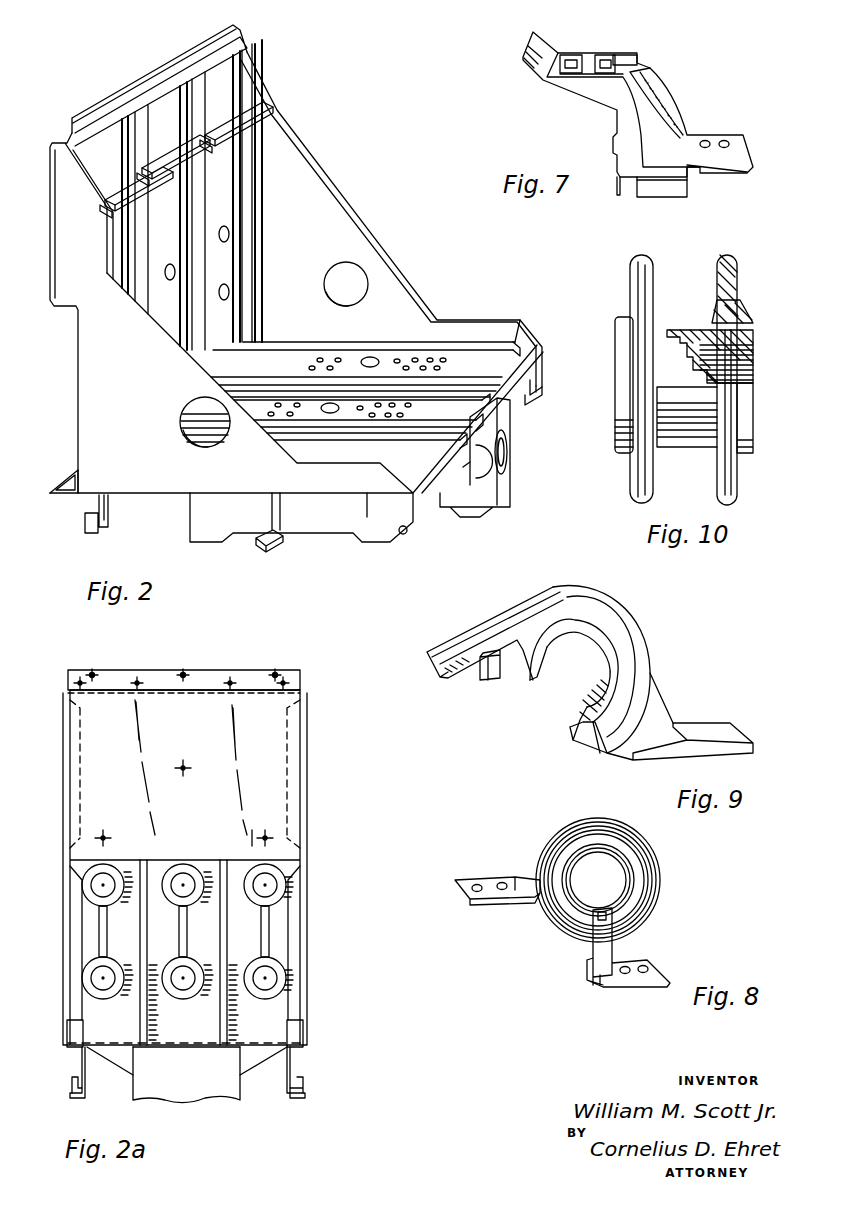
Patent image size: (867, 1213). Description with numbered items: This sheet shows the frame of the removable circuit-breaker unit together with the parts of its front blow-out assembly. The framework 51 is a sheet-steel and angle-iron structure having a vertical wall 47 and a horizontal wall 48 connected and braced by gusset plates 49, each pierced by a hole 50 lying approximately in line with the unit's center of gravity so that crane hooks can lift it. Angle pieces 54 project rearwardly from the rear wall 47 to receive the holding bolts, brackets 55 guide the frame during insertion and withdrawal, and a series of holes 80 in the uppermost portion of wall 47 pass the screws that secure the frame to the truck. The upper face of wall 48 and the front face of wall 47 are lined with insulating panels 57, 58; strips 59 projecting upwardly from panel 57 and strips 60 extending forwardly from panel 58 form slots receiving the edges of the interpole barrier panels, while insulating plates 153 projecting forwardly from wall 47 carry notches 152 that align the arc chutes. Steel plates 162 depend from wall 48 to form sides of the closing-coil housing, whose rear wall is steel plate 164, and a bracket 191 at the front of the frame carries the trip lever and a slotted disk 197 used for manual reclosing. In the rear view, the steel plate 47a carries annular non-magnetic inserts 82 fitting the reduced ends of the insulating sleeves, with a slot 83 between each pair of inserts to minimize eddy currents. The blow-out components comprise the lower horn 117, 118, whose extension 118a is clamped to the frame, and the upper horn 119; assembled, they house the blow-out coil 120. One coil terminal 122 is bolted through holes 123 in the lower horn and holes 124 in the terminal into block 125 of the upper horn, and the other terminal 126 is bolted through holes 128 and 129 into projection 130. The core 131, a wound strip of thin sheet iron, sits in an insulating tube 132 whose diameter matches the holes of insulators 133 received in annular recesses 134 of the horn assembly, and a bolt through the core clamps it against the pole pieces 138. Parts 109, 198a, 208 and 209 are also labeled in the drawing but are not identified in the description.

In FIG. 2, the vertical wall 47 is at (52, 212).
In FIG. 2A, the vertical wall 47 is at (285, 740).
In FIG. 2A, the steel plate 47a is at (280, 935).
In FIG. 2, the horizontal wall 48 is at (536, 372).
In FIG. 2, the gusset plates 49 is at (343, 218).
In FIG. 2, the holes 50 is at (365, 272).
In FIG. 2, the framework 51 is at (44, 418).
In FIG. 2A, the framework 51 is at (116, 1066).
In FIG. 2, the angle pieces 54 is at (62, 497).
In FIG. 2, the brackets 55 is at (108, 518).
In FIG. 2A, the brackets 55 is at (72, 1084).
In FIG. 2, the panel of insulating material 57 is at (503, 365).
In FIG. 2, the panel of insulating material 58 is at (230, 165).
In FIG. 2, the strips of insulating material 59 is at (443, 344).
In FIG. 2, the strips of insulating material 60 is at (130, 140).
In FIG. 2, the holes 80 is at (100, 118).
In FIG. 2A, the holes 80 is at (96, 675).
In FIG. 2A, the annular inserts 82 is at (113, 903).
In FIG. 2A, the slot 83 is at (98, 942).
In FIG. 2A, the mounting bracket 109 is at (75, 1100).
In FIG. 7, the lower horn 117 is at (533, 45).
In FIG. 7, the lower arcing horn 118 is at (603, 90).
In FIG. 7, the extension 118a is at (625, 183).
In FIG. 9, the upper arcing horn 119 is at (462, 638).
In FIG. 8, the blow-out coil 120 is at (662, 897).
In FIG. 8, the terminal 122 is at (470, 880).
In FIG. 7, the holes 123 is at (584, 53).
In FIG. 8, the holes 124 is at (503, 882).
In FIG. 9, the block 125 is at (481, 677).
In FIG. 8, the terminal 126 is at (650, 985).
In FIG. 7, the holes 128 is at (730, 142).
In FIG. 8, the holes 129 is at (648, 966).
In FIG. 9, the projection 130 is at (626, 757).
In FIG. 10, the core 131 is at (753, 350).
In FIG. 10, the tube of insulating material 132 is at (757, 330).
In FIG. 10, the insulators 133 is at (747, 312).
In FIG. 7, the annular recesses 134 is at (625, 53).
In FIG. 9, the annular recesses 134 is at (628, 660).
In FIG. 10, the pole pieces 138 is at (653, 287).
In FIG. 2, the notch 152 is at (148, 196).
In FIG. 2, the plates of insulation 153 is at (122, 190).
In FIG. 2, the steel plates 162 is at (203, 520).
In FIG. 2A, the steel plate 164 is at (172, 1090).
In FIG. 2, the bracket 191 is at (477, 495).
In FIG. 2, the disk 197 is at (500, 460).
In FIG. 2, the hole 198a is at (404, 534).
In FIG. 2, the recess 208 is at (490, 462).
In FIG. 2, the foot 209 is at (258, 548).